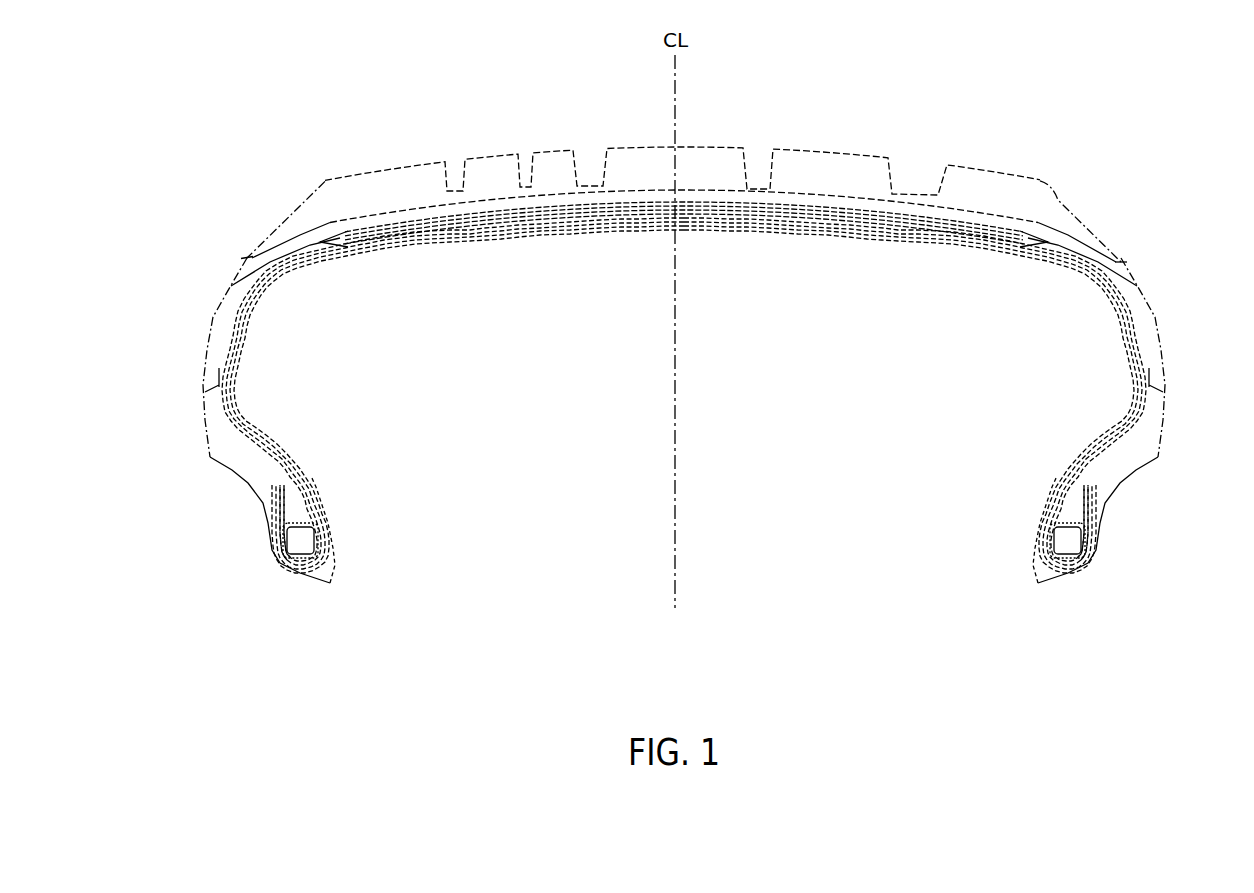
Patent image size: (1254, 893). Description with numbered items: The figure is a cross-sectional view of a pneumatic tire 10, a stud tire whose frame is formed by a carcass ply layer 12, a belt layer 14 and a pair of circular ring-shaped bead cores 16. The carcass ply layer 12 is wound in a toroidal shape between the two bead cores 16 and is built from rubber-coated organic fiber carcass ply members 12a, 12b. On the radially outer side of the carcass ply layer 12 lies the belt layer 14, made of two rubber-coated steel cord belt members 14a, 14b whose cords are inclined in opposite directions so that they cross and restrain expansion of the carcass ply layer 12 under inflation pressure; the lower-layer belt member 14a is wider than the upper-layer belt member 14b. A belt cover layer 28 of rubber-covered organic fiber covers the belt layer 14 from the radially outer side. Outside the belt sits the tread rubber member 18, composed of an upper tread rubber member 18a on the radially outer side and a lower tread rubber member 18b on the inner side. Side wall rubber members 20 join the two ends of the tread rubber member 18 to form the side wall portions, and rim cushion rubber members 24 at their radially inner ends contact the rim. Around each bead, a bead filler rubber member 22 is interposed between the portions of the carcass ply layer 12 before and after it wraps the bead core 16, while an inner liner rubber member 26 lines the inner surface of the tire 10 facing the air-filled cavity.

The pneumatic tire 10 is at (1076, 144).
The carcass ply layer 12 is at (997, 272).
The carcass ply member 12a is at (684, 397).
The carcass ply member 12b is at (684, 391).
The belt layer 14 is at (898, 106).
The lower-layer belt member 14a is at (684, 174).
The upper-layer belt member 14b is at (684, 176).
The bead core 16 is at (709, 537).
The tread rubber member 18 is at (1158, 190).
The upper tread rubber member 18a is at (737, 183).
The lower tread rubber member 18b is at (701, 226).
The side wall rubber member 20 is at (686, 347).
The bead filler rubber member 22 is at (715, 519).
The rim cushion rubber member 24 is at (665, 511).
The inner liner rubber member 26 is at (684, 406).
The belt cover layer 28 is at (682, 177).